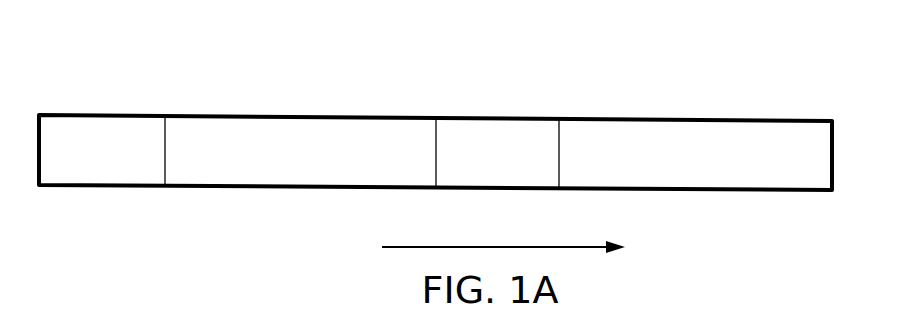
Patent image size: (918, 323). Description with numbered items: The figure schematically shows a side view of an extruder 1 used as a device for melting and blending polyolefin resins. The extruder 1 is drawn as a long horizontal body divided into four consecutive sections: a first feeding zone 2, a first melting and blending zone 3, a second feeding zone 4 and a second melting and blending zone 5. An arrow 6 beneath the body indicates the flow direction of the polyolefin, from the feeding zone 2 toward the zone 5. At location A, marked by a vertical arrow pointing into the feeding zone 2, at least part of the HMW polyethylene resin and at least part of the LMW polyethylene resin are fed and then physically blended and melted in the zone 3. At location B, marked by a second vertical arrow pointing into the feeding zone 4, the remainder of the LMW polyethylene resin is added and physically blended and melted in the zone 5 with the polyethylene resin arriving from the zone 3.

The extruder 1 is at (816, 103).
The feeding zone 2 is at (95, 163).
The melting and blending zone 3 is at (295, 163).
The feeding zone 4 is at (491, 163).
The melting and blending zone 5 is at (674, 164).
The arrow 6 is at (501, 246).
The location A is at (103, 100).
The location B is at (499, 104).